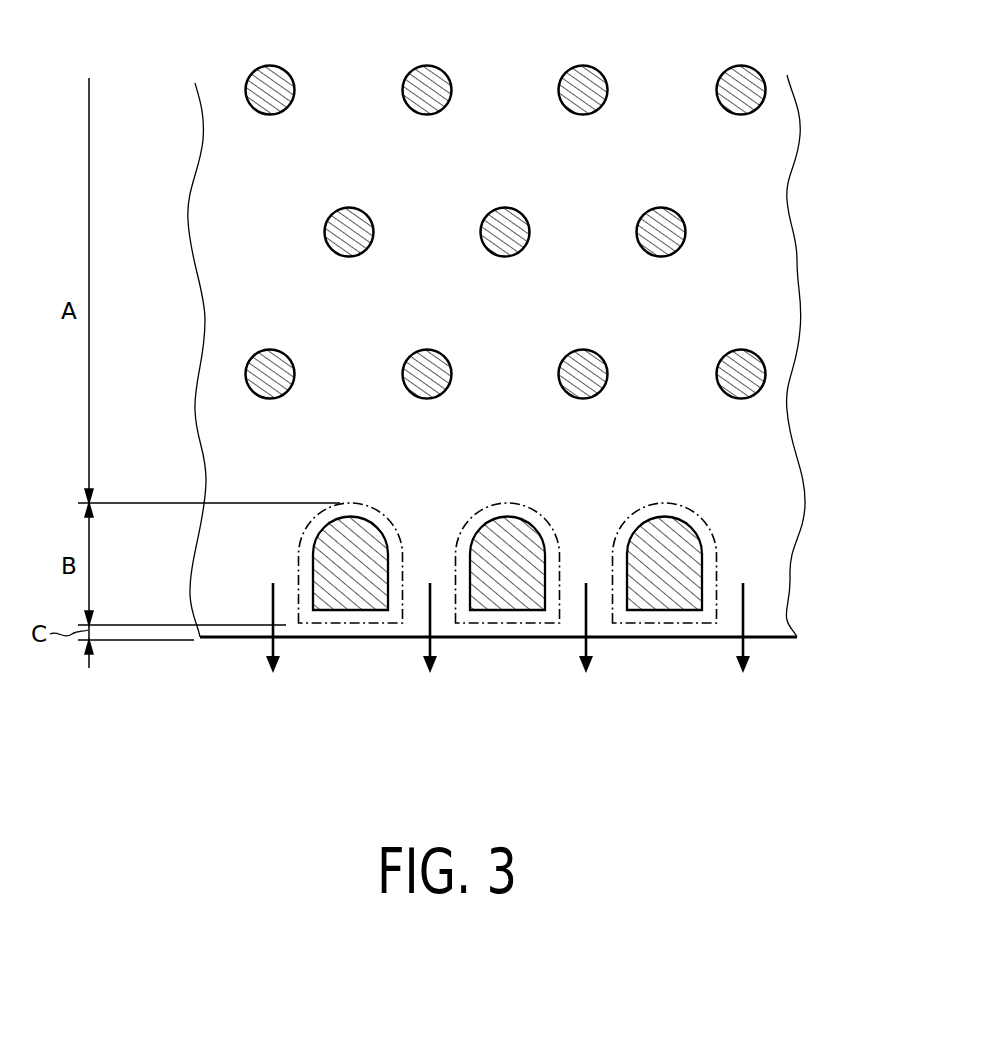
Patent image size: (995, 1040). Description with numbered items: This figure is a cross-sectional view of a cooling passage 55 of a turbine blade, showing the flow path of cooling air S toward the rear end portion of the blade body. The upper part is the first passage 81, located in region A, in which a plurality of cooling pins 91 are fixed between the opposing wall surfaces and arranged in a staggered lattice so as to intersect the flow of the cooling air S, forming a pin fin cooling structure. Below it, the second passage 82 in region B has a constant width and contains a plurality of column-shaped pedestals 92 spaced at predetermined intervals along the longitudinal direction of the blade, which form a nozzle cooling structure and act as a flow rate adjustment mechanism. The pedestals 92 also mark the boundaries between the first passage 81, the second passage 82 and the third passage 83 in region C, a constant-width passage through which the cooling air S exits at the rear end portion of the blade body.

The cooling passage 55 is at (764, 226).
The first passage 81 is at (762, 277).
The second passage 82 is at (763, 553).
The third passage 83 is at (727, 628).
The cooling pins 91 is at (268, 72).
The pedestals 92 is at (349, 532).
The cooling air S is at (277, 648).